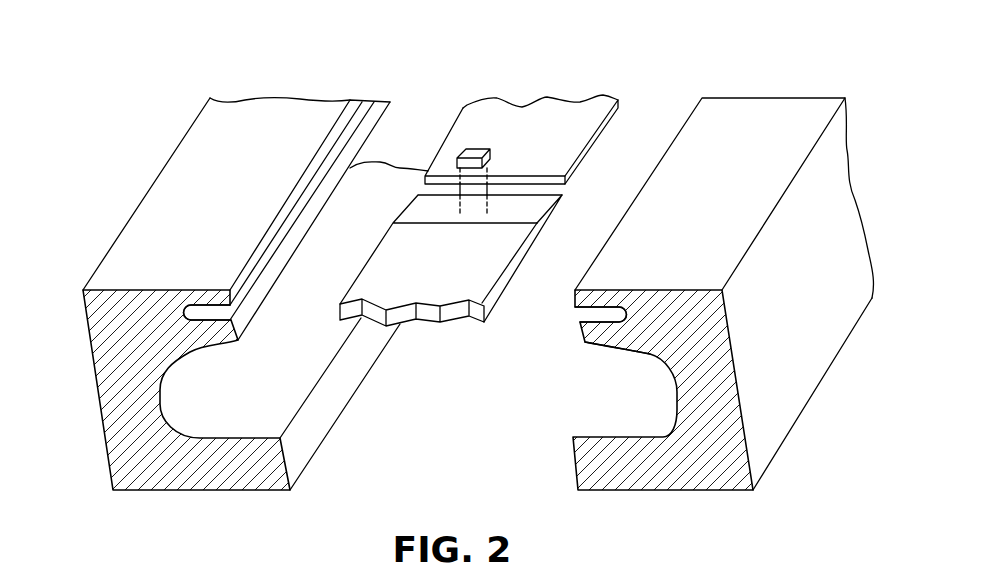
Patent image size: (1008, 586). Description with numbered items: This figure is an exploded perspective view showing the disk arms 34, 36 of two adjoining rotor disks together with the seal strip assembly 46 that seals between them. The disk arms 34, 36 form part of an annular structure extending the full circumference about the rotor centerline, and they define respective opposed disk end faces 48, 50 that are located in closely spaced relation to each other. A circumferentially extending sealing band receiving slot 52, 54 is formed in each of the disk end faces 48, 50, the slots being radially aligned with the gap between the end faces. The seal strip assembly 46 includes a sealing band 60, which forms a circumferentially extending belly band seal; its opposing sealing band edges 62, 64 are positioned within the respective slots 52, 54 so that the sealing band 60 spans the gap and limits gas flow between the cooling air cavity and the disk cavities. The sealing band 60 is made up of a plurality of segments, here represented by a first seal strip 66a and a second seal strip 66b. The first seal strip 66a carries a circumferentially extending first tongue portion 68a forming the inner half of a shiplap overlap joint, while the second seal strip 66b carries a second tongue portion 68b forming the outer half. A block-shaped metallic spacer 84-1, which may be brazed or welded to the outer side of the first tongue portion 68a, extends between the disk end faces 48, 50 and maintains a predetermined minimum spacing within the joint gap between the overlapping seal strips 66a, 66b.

The disk arm 34 is at (163, 148).
The disk arm 36 is at (823, 207).
The seal strip assembly 46 is at (423, 142).
The disk end face 48 is at (248, 310).
The disk end face 50 is at (583, 327).
The sealing band receiving slot 52 is at (187, 313).
The sealing band receiving slot 54 is at (620, 312).
The sealing band 60 is at (633, 93).
The sealing band edge 62 is at (370, 258).
The sealing band edge 64 is at (487, 304).
The first seal strip 66a is at (405, 258).
The second seal strip 66b is at (541, 121).
The first tongue portion 68a is at (540, 227).
The second tongue portion 68b is at (589, 154).
The spacer 84-1 is at (468, 147).